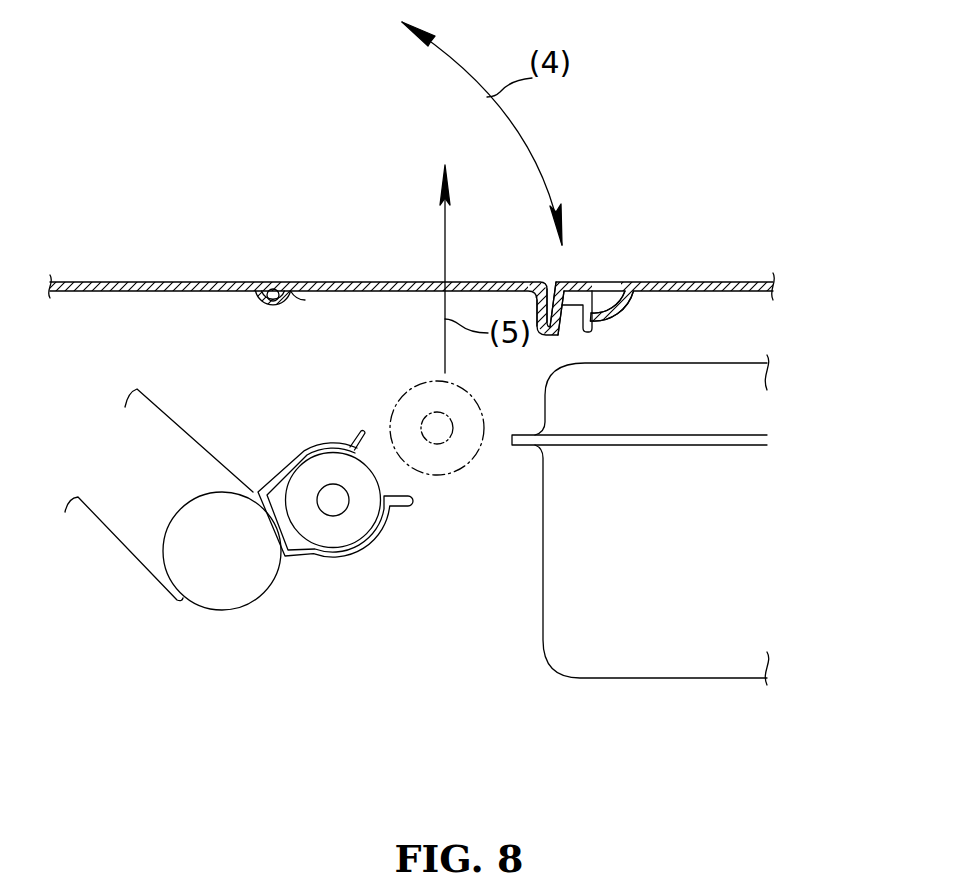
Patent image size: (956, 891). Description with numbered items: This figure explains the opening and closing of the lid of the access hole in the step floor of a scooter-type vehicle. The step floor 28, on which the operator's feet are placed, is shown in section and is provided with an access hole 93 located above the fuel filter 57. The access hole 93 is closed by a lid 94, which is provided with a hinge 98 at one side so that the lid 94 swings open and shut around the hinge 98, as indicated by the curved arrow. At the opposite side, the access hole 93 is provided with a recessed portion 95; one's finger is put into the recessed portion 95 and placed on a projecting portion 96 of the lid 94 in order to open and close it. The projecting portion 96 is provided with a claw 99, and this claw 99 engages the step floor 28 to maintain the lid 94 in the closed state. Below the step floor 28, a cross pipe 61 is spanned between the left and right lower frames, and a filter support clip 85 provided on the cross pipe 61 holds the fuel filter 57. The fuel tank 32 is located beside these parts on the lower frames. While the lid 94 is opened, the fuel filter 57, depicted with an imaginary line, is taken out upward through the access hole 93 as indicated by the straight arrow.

The step floor 28 is at (120, 283).
The fuel tank 32 is at (570, 663).
The fuel filter 57 is at (477, 457).
The cross pipe 61 is at (267, 585).
The filter support clip 85 is at (363, 543).
The access hole 93 is at (305, 298).
The lid 94 is at (497, 281).
The recessed portion 95 is at (614, 288).
The projecting portion 96 is at (562, 283).
The hinge 98 is at (258, 288).
The claw 99 is at (565, 305).